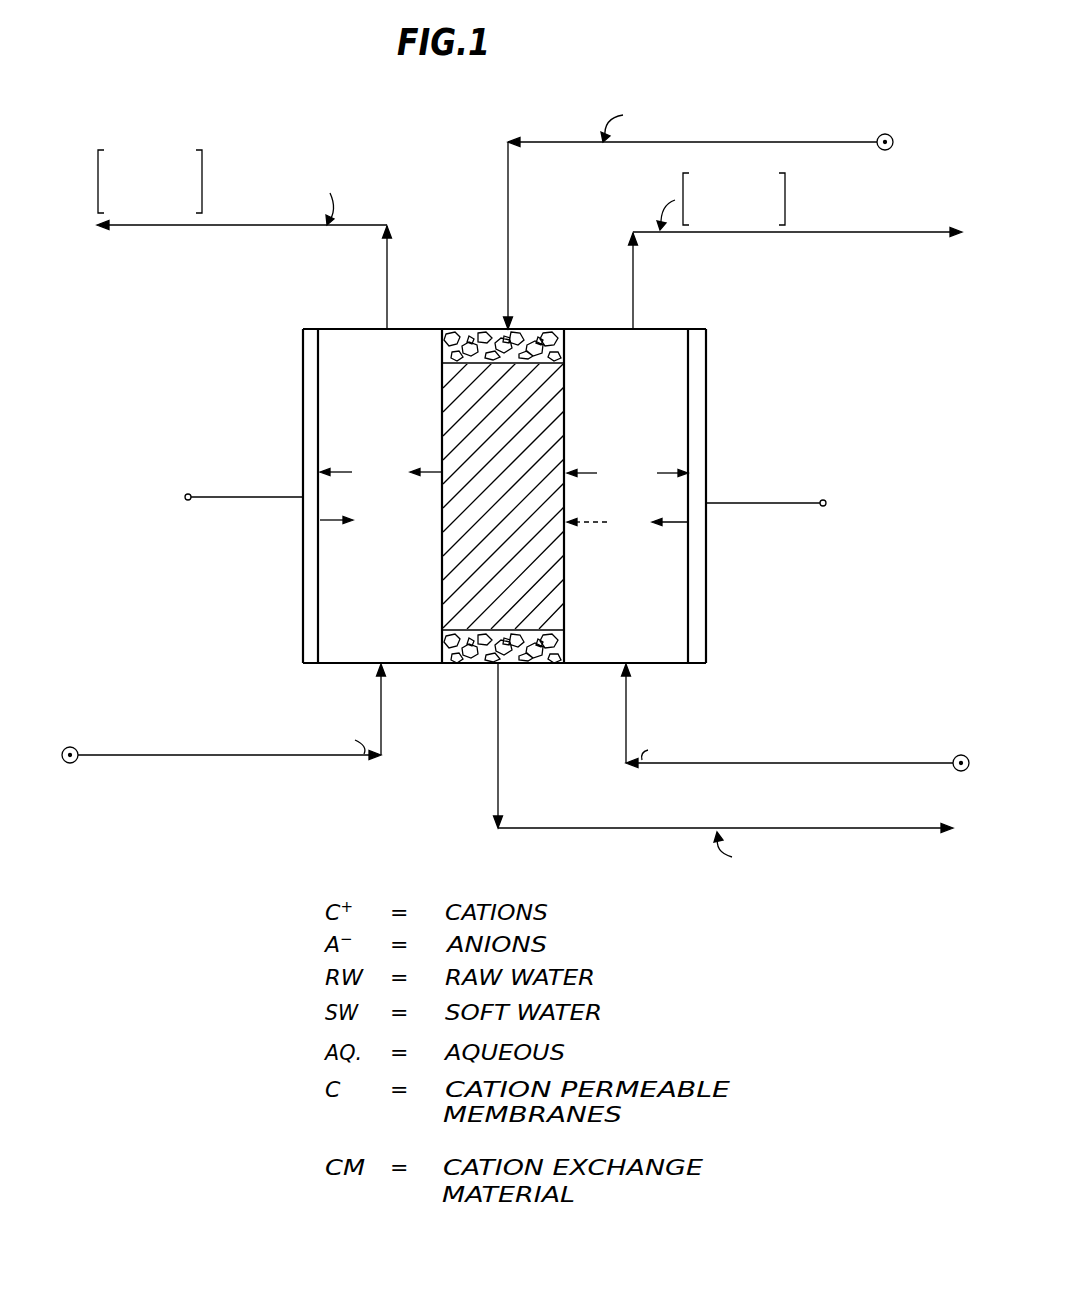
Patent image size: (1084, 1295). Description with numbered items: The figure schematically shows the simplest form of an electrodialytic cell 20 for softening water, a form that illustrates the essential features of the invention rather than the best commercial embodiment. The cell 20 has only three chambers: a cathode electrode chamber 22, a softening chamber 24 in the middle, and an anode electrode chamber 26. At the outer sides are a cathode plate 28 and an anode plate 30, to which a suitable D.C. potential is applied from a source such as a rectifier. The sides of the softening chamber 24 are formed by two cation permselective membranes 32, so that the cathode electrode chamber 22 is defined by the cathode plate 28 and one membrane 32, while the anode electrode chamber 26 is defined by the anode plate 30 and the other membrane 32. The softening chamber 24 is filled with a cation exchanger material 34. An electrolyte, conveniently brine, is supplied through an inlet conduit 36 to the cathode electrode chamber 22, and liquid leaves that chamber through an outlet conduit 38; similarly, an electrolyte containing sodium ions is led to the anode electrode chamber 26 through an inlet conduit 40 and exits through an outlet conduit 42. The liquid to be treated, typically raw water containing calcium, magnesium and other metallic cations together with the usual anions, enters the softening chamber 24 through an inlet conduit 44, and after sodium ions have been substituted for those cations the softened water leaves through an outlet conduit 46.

The electrodialytic cell 20 is at (541, 508).
The cathode electrode chamber 22 is at (345, 652).
The softening chamber 24 is at (458, 665).
The anode electrode chamber 26 is at (667, 650).
The cathode plate 28 is at (308, 396).
The anode plate 30 is at (705, 378).
The cation permselective membranes 32 is at (442, 583).
The cation exchanger material 34 is at (557, 387).
The inlet conduit 36 is at (130, 755).
The outlet conduit 38 is at (282, 227).
The inlet conduit 40 is at (738, 763).
The outlet conduit 42 is at (860, 233).
The inlet conduit 44 is at (548, 143).
The outlet conduit 46 is at (590, 830).